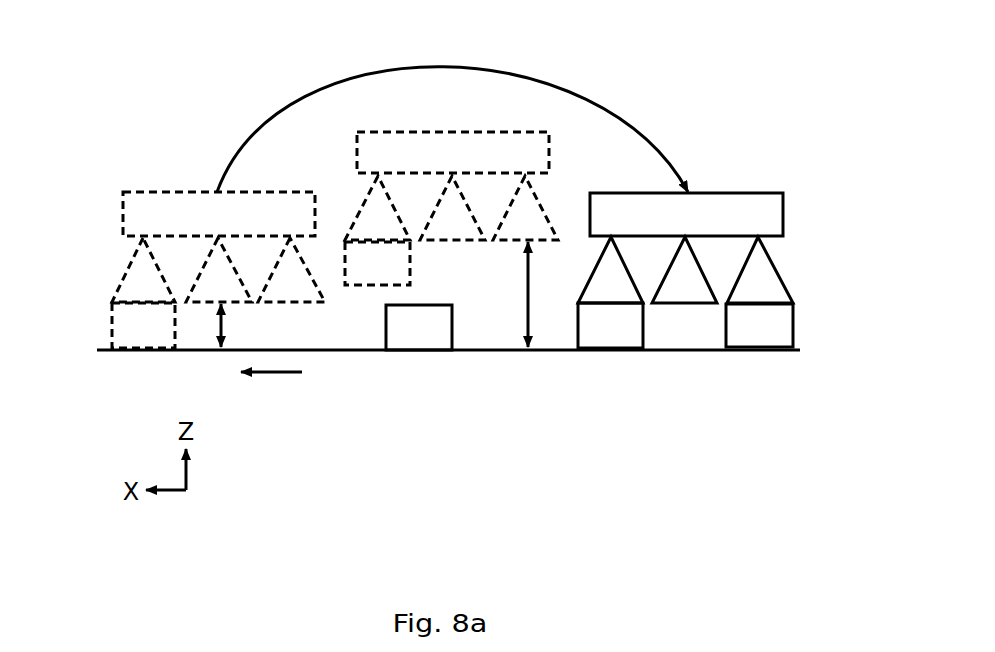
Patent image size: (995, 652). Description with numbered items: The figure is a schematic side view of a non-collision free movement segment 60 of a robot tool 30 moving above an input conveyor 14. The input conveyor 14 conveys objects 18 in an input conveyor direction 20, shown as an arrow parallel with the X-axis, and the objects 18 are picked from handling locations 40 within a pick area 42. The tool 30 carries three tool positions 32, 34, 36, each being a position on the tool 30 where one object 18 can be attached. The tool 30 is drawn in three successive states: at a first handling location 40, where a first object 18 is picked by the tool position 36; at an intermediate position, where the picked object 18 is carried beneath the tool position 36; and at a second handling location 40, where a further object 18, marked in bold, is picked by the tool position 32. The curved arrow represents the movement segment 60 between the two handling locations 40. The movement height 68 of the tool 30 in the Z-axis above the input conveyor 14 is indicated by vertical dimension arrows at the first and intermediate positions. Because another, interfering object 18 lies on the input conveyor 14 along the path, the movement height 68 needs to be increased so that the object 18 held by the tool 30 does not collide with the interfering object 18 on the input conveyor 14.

The input conveyor 14 is at (463, 390).
The object 18 is at (127, 342).
The input conveyor direction 20 is at (275, 373).
The tool 30 is at (203, 226).
The tool position 32 is at (276, 300).
The tool position 34 is at (203, 300).
The tool position 36 is at (127, 300).
The handling location 40 is at (110, 322).
The pick area 42 is at (387, 390).
The non-collision free movement segment 60 is at (446, 68).
The movement height 68 is at (223, 326).